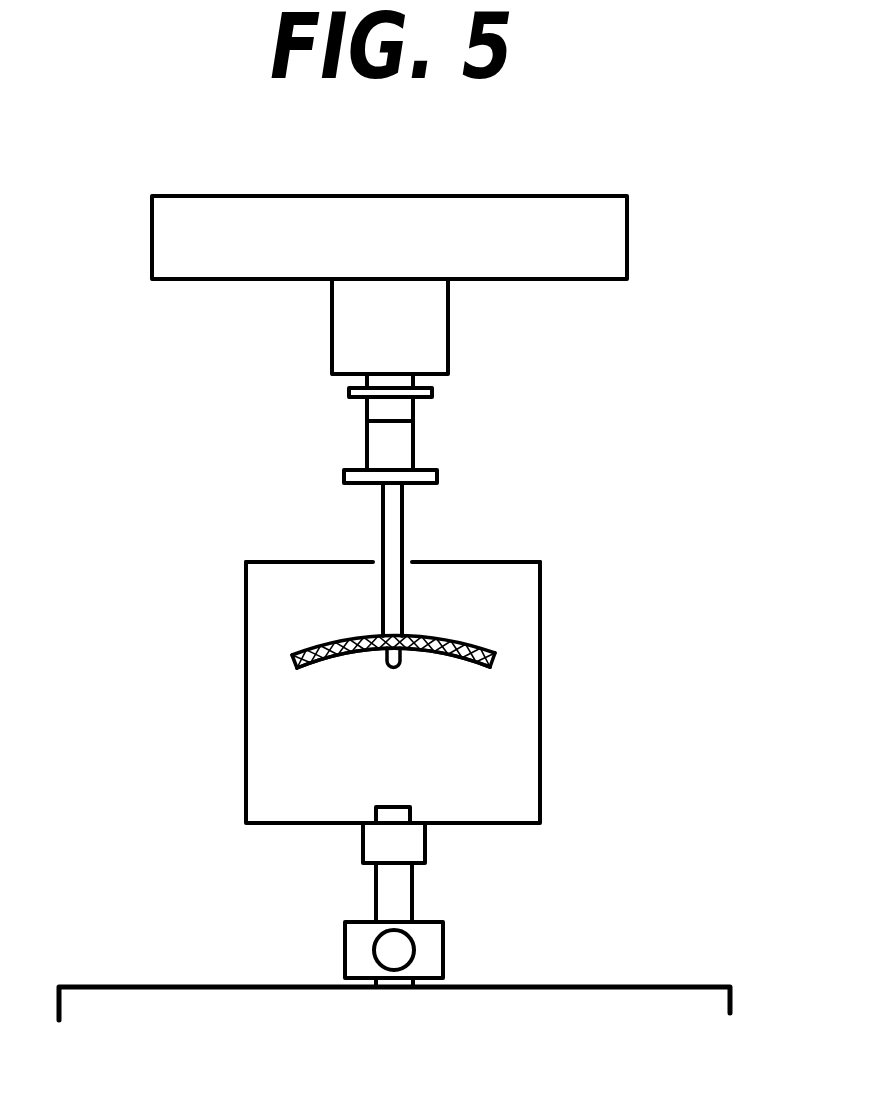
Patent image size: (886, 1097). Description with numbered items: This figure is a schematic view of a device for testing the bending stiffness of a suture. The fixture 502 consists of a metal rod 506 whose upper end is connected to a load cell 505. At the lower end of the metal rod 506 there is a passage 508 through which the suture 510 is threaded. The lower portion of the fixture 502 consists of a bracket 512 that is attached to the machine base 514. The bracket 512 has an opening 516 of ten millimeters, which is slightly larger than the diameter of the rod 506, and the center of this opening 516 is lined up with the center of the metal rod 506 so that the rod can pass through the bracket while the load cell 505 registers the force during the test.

The fixture 502 is at (258, 392).
The load cell 505 is at (627, 233).
The metal rod 506 is at (380, 525).
The passage 508 is at (386, 632).
The suture 510 is at (312, 668).
The bracket 512 is at (246, 797).
The machine base 514 is at (549, 986).
The opening 516 is at (378, 560).